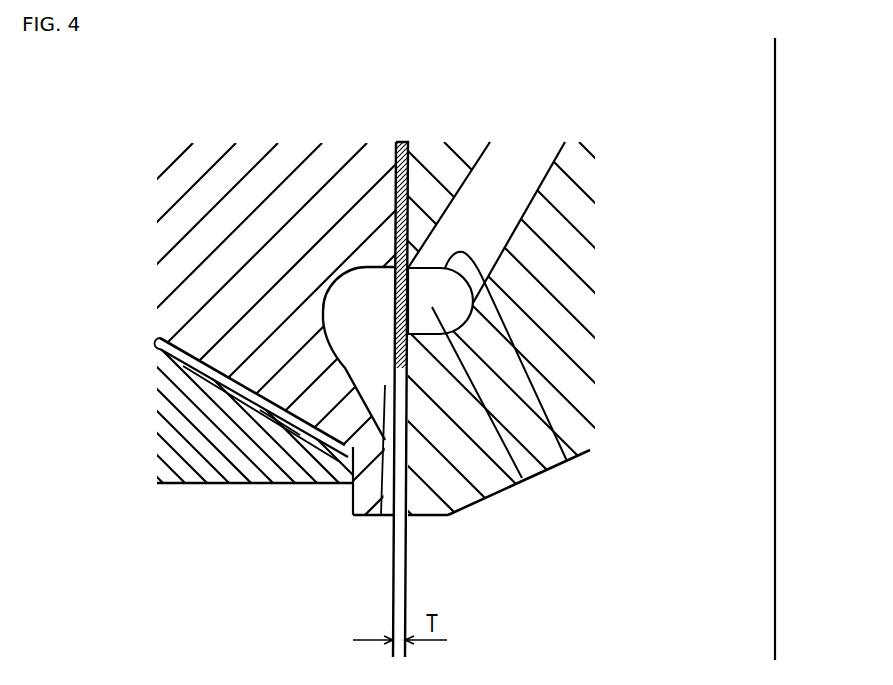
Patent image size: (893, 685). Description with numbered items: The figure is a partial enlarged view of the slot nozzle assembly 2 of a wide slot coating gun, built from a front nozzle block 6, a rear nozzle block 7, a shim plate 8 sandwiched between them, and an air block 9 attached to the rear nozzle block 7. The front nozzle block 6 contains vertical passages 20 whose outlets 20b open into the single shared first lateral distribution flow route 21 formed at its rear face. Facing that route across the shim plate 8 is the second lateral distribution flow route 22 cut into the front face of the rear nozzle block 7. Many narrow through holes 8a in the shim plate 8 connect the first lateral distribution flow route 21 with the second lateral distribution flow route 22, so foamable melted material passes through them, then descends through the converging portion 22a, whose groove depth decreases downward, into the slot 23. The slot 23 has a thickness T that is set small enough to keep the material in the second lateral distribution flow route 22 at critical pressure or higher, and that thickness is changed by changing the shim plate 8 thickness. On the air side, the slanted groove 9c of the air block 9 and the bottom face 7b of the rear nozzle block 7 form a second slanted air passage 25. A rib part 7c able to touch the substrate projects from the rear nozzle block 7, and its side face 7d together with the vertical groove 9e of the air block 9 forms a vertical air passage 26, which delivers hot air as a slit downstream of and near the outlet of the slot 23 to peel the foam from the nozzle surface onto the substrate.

The slot nozzle assembly 2 is at (690, 184).
The front nozzle block 6 is at (590, 425).
The rear nozzle block 7 is at (202, 203).
The bottom face of the rear nozzle block 7b is at (160, 340).
The rib part 7c is at (364, 515).
The side face of the rib part 7d is at (352, 500).
The shim plate 8 is at (405, 140).
The narrow through holes 8a is at (428, 256).
The air block 9 is at (173, 458).
The slanted groove 9c is at (162, 350).
The vertical groove 9e is at (350, 484).
The vertical passages 20 is at (532, 170).
The outlets of the vertical passages 20b is at (570, 465).
The first lateral distribution flow route 21 is at (523, 474).
The second lateral distribution flow route 22 is at (363, 297).
The converging portion 22a is at (381, 515).
The slot 23 is at (478, 514).
The second slanted air passage 25 is at (225, 380).
The vertical air passage 26 is at (290, 478).